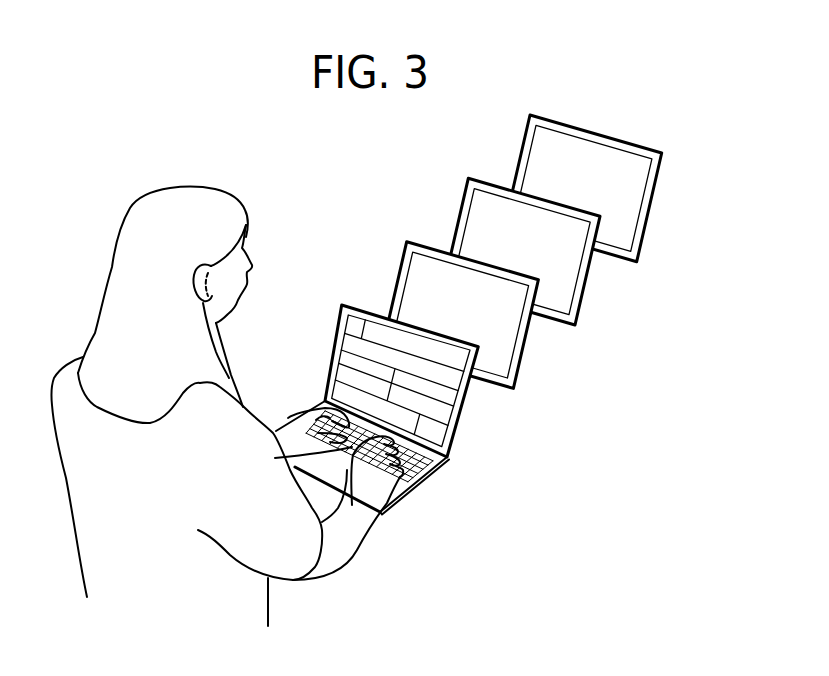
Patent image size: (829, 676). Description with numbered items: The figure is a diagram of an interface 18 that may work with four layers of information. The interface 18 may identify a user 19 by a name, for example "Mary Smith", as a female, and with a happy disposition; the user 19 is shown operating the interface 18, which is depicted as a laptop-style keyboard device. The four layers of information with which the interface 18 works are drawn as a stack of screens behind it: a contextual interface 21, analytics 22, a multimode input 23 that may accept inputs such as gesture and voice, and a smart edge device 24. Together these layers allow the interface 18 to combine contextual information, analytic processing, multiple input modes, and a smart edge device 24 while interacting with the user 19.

The interface 18 is at (394, 411).
The user 19 is at (82, 215).
The contextual interface 21 is at (466, 410).
The analytics 22 is at (527, 347).
The multimode input 23 is at (588, 283).
The smart edge device 24 is at (650, 220).